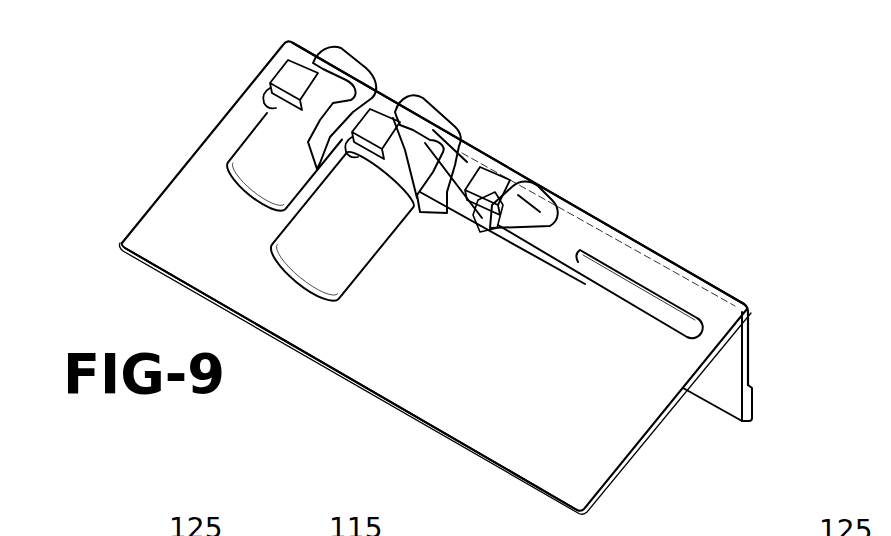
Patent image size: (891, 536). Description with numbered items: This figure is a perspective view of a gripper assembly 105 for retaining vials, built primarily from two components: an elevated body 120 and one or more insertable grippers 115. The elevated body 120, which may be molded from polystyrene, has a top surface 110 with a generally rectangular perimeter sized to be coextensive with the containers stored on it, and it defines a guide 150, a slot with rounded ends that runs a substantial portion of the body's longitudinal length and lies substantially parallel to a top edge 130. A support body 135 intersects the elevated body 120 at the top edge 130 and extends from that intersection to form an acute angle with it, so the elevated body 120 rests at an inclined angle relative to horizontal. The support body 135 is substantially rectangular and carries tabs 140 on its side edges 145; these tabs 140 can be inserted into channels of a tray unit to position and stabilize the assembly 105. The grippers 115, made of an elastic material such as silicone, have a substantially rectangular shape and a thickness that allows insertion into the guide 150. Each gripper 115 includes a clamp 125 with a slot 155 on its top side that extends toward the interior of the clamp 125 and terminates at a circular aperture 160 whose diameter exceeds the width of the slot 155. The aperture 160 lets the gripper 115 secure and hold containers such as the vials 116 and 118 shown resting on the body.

The gripper assembly 105 is at (798, 197).
The top surface 110 is at (569, 412).
The gripper 115 is at (556, 256).
The vial 116 is at (302, 161).
The vial 118 is at (367, 232).
The elevated body 120 is at (465, 397).
The clamp 125 is at (543, 223).
The top edge 130 is at (690, 273).
The support body 135 is at (720, 383).
The tab 140 is at (752, 400).
The side edge 145 is at (752, 347).
The guide 150 is at (622, 280).
The slot 155 is at (257, 535).
The aperture 160 is at (507, 227).